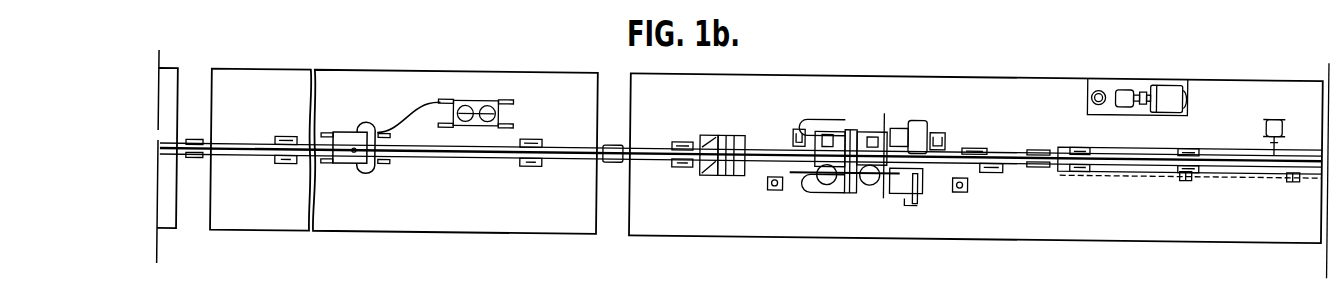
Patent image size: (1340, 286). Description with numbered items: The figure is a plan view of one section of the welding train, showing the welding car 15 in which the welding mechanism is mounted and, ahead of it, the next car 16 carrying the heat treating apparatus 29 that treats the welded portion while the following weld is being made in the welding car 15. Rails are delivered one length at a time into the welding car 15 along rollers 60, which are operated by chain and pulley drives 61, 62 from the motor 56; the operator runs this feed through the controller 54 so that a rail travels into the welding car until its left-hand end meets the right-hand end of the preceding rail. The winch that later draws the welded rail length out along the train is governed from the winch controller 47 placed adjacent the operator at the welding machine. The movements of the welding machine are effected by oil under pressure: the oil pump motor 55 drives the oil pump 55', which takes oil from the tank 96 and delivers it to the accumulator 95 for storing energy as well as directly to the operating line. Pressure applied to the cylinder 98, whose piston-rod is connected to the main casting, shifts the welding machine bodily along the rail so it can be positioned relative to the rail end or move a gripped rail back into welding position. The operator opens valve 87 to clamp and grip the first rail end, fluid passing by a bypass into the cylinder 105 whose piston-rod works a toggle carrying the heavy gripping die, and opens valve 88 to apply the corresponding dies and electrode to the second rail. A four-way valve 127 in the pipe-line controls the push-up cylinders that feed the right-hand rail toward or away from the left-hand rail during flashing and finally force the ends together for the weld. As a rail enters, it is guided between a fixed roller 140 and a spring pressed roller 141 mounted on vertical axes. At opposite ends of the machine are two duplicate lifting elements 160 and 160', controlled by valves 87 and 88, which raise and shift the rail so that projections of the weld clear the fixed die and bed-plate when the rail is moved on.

The welding car 15 is at (1163, 222).
The heat treating car 16 is at (342, 220).
The heat treating apparatus 29 is at (345, 161).
The winch controller 47 is at (772, 183).
The controller 54 is at (958, 183).
The oil pump motor 55 is at (1173, 81).
The oil pump 55' is at (1134, 74).
The motor 56 is at (1275, 105).
The rollers 60 is at (1080, 140).
The chain and pulley drive 61 is at (1122, 162).
The chain and pulley drive 62 is at (1185, 168).
The valve 87 is at (815, 186).
The valve 88 is at (887, 175).
The accumulator 95 is at (1098, 79).
The tank 96 is at (1088, 77).
The cylinder 98 is at (997, 142).
The cylinder 105 is at (827, 169).
The four-way valve 127 is at (907, 194).
The fixed roller 140 is at (884, 135).
The spring pressed roller 141 is at (884, 178).
The rail lifting element 160 is at (946, 120).
The rail lifting element 160' is at (793, 117).